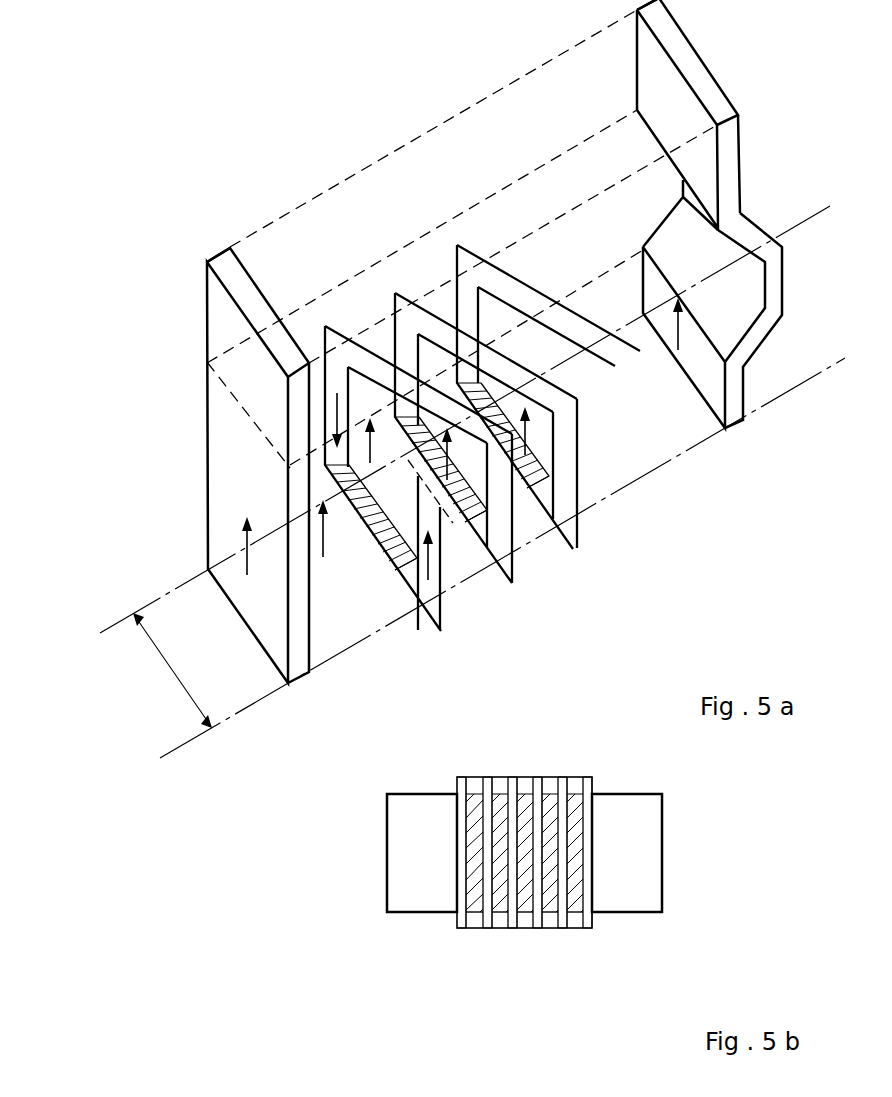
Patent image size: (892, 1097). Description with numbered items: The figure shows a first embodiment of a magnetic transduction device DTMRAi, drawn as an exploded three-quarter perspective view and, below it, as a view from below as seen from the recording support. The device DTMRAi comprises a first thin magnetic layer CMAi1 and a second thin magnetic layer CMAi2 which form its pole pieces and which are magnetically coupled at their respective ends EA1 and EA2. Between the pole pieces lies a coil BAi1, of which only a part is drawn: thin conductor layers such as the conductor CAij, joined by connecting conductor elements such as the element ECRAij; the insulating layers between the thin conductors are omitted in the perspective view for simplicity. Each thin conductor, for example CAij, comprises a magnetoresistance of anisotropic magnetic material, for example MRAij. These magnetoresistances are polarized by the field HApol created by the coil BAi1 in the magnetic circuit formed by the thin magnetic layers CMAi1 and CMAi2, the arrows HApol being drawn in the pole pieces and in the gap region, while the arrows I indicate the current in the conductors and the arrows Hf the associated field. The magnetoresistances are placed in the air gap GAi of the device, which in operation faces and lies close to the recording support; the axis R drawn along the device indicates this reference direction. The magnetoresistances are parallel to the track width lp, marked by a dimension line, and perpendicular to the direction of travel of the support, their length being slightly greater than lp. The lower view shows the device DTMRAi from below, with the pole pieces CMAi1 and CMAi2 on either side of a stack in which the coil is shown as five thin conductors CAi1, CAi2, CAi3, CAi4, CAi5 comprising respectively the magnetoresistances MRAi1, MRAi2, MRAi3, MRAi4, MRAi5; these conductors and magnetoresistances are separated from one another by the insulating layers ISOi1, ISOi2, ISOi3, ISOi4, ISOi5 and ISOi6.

In FIG. 5a, the magnetic transduction device DTMRAi is at (315, 92).
In FIG. 5b, the magnetic transduction device DTMRAi is at (676, 877).
In FIG. 5a, the first thin magnetic layer CMAi1 is at (213, 402).
In FIG. 5b, the first thin magnetic layer CMAi1 is at (422, 853).
In FIG. 5a, the second thin magnetic layer CMAi2 is at (740, 152).
In FIG. 5b, the second thin magnetic layer CMAi2 is at (627, 853).
In FIG. 5a, the end of first thin magnetic layer EA1 is at (240, 332).
In FIG. 5a, the end of second thin magnetic layer EA2 is at (657, 90).
In FIG. 5a, the coil BAi1 is at (445, 290).
In FIG. 5a, the connecting conductor element ECRAij is at (418, 384).
In FIG. 5a, the magnetoresistance MRAij is at (472, 530).
In FIG. 5a, the thin conductor layer CAij is at (507, 584).
In FIG. 5a, the air gap GAi is at (535, 542).
In FIG. 5a, the polarizing field HApol is at (476, 436).
In FIG. 5a, the field produced by current Hf is at (457, 443).
In FIG. 5a, the current I is at (382, 486).
In FIG. 5a, the track width lp is at (172, 670).
In FIG. 5a, the reference axis R is at (170, 754).
In FIG. 5b, the magnetoresistance MRAi1 is at (468, 793).
In FIG. 5b, the magnetoresistance MRAi2 is at (498, 793).
In FIG. 5b, the magnetoresistance MRAi3 is at (527, 793).
In FIG. 5b, the magnetoresistance MRAi4 is at (544, 793).
In FIG. 5b, the magnetoresistance MRAi5 is at (573, 793).
In FIG. 5b, the insulating layer ISOi1 is at (461, 926).
In FIG. 5b, the insulating layer ISOi2 is at (487, 929).
In FIG. 5b, the insulating layer ISOi3 is at (512, 929).
In FIG. 5b, the insulating layer ISOi4 is at (537, 929).
In FIG. 5b, the insulating layer ISOi5 is at (562, 929).
In FIG. 5b, the insulating layer ISOi6 is at (590, 924).
In FIG. 5b, the thin conductor CAi1 is at (474, 929).
In FIG. 5b, the thin conductor CAi2 is at (500, 929).
In FIG. 5b, the thin conductor CAi3 is at (525, 929).
In FIG. 5b, the thin conductor CAi4 is at (550, 929).
In FIG. 5b, the thin conductor CAi5 is at (575, 929).